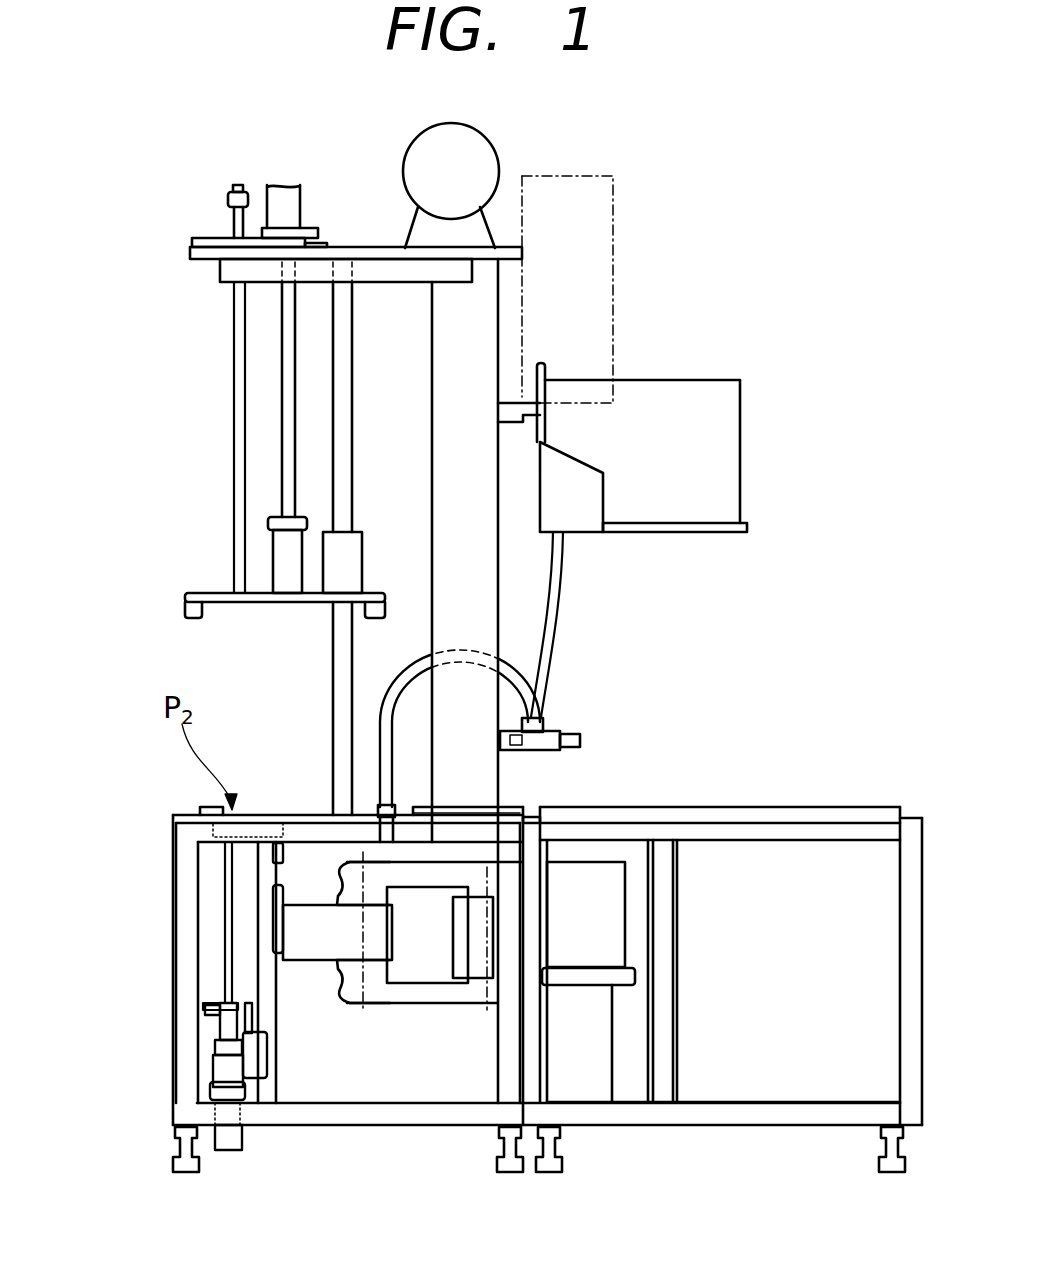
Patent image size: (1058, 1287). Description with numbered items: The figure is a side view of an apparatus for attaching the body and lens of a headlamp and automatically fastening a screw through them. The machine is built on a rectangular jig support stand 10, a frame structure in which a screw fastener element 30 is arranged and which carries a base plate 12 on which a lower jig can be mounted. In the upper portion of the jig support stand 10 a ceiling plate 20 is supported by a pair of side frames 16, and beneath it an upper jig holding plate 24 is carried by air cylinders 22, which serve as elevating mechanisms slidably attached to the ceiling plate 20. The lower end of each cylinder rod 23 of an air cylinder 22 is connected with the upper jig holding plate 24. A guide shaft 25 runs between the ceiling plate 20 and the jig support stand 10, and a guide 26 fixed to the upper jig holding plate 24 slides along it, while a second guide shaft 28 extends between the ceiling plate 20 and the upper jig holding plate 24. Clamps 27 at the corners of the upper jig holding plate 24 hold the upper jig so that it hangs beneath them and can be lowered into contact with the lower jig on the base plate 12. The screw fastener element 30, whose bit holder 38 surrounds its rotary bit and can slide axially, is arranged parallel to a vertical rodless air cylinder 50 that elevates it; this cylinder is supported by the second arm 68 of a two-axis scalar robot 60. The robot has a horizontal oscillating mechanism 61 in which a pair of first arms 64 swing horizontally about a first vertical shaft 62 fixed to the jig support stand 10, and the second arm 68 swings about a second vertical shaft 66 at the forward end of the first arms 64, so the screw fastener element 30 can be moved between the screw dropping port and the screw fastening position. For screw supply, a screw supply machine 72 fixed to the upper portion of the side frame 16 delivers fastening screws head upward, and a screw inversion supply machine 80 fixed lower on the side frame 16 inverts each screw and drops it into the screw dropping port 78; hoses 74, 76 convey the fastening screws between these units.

The jig support stand 10 is at (150, 943).
The base plate 12 is at (300, 815).
The side frame 16 is at (432, 342).
The ceiling plate 20 is at (368, 248).
The air cylinder 22 is at (263, 215).
The cylinder rod 23 is at (282, 367).
The upper jig holding plate 24 is at (213, 592).
The guide shaft 25 is at (332, 693).
The guide 26 is at (327, 527).
The clamp 27 is at (192, 618).
The second guide shaft 28 is at (233, 450).
The screw fastener element 30 is at (200, 1072).
The bit holder 38 is at (225, 883).
The rodless air cylinder 50 is at (265, 915).
The two-axis scalar robot 60 is at (434, 1018).
The horizontal oscillating mechanism 61 is at (428, 1025).
The first vertical shaft 62 is at (487, 1010).
The first arm 64 is at (432, 880).
The second vertical shaft 66 is at (342, 997).
The second arm 68 is at (302, 933).
The screw supply machine 72 is at (729, 405).
The hose 74 is at (562, 588).
The hose 76 is at (517, 673).
The screw dropping port 78 is at (416, 794).
The screw inversion supply machine 80 is at (606, 727).